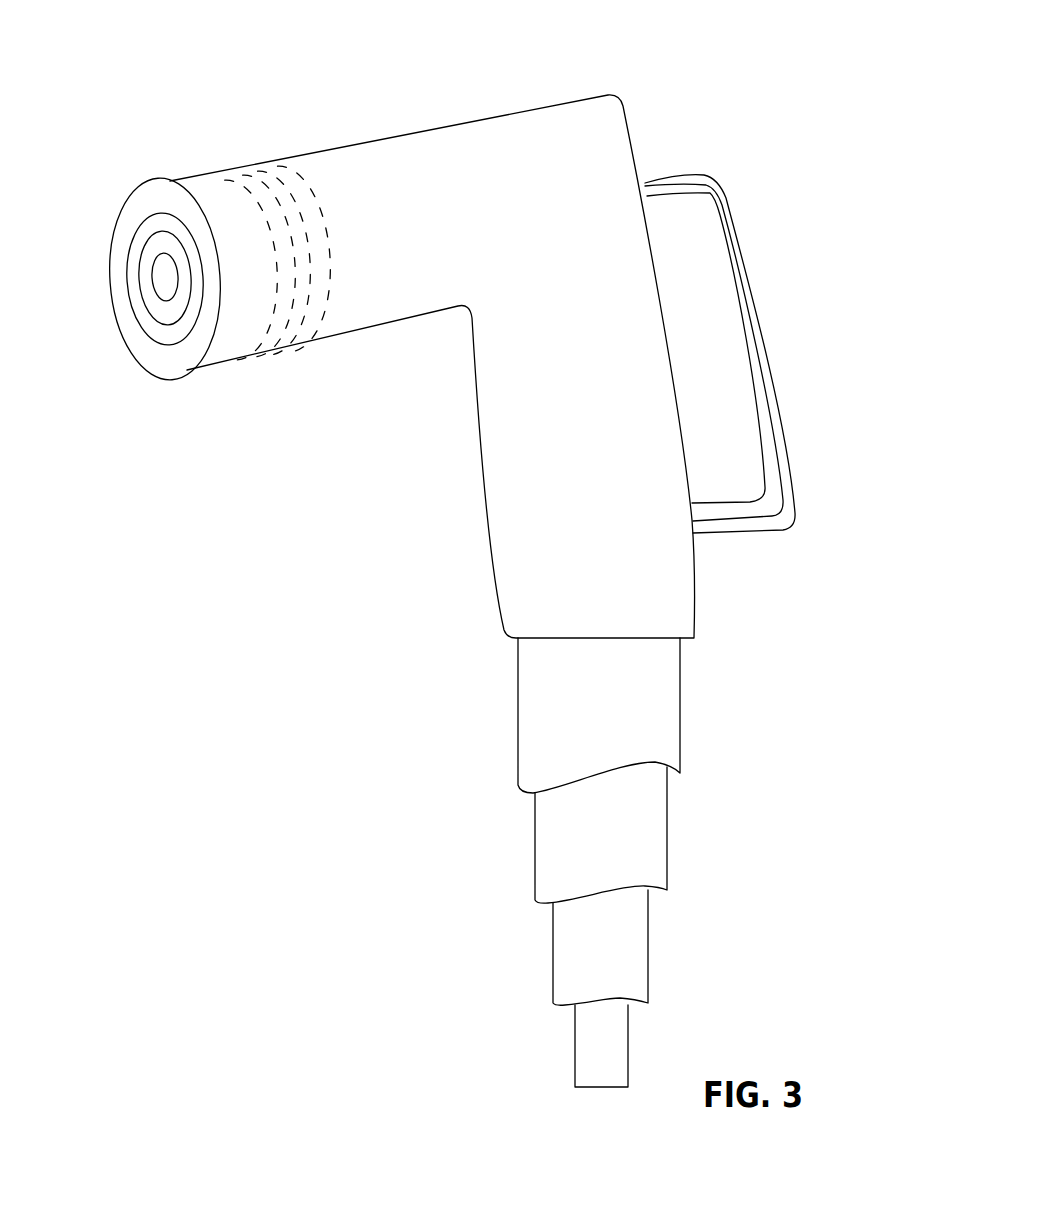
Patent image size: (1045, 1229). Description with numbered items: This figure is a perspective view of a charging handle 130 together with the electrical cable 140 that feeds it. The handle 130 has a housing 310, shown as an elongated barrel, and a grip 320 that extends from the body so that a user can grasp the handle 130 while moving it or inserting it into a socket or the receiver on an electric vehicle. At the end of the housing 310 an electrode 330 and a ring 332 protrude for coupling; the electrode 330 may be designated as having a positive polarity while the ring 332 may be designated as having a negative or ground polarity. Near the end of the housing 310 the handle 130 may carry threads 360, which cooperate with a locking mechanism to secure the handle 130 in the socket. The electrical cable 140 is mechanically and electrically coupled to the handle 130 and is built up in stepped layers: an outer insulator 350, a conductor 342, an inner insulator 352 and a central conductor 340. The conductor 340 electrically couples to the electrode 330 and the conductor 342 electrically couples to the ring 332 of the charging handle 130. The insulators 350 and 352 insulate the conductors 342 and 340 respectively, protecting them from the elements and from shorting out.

The handle 130 is at (638, 85).
The electrical cable 140 is at (640, 860).
The housing 310 is at (390, 115).
The grip 320 is at (752, 261).
The electrode 330 is at (157, 310).
The ring 332 is at (127, 273).
The conductor 340 is at (575, 1050).
The conductor 342 is at (535, 848).
The insulator 350 is at (518, 713).
The insulator 352 is at (153, 304).
The threads 360 is at (285, 355).